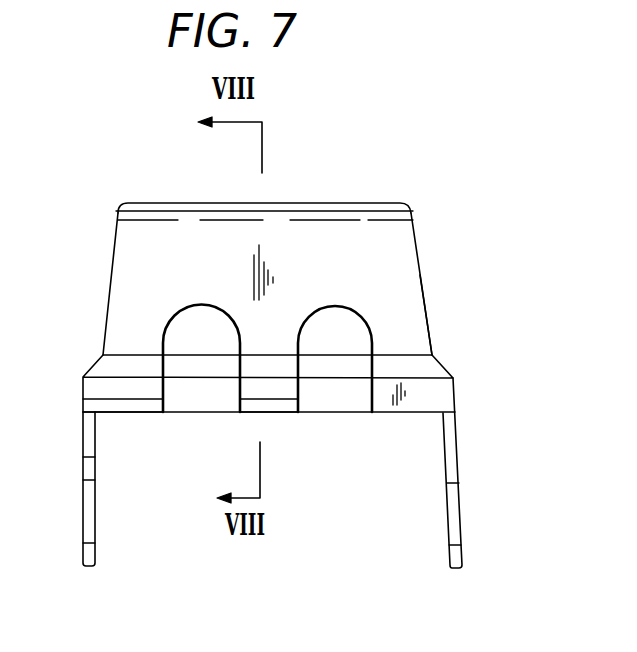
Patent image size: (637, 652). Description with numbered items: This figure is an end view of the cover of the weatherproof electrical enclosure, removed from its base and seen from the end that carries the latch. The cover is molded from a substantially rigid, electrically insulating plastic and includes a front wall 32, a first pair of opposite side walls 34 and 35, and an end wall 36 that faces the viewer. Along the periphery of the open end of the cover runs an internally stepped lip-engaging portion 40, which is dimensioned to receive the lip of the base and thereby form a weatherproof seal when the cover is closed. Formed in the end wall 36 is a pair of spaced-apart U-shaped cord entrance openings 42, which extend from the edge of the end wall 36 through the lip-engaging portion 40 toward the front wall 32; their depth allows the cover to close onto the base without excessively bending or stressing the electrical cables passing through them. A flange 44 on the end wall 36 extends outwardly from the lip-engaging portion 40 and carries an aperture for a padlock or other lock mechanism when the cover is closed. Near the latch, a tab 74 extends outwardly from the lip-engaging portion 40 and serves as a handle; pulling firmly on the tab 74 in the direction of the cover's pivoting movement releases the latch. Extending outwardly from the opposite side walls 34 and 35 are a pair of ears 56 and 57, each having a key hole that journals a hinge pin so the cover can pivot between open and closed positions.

The front wall 32 is at (318, 203).
The side wall 34 is at (425, 293).
The side wall 35 is at (110, 272).
The end wall 36 is at (405, 262).
The lip-engaging portion 40 is at (445, 357).
The U-shaped cord entrance openings 42 is at (188, 312).
The flange 44 is at (132, 413).
The ear 56 is at (457, 446).
The ear 57 is at (81, 497).
The tab 74 is at (284, 413).